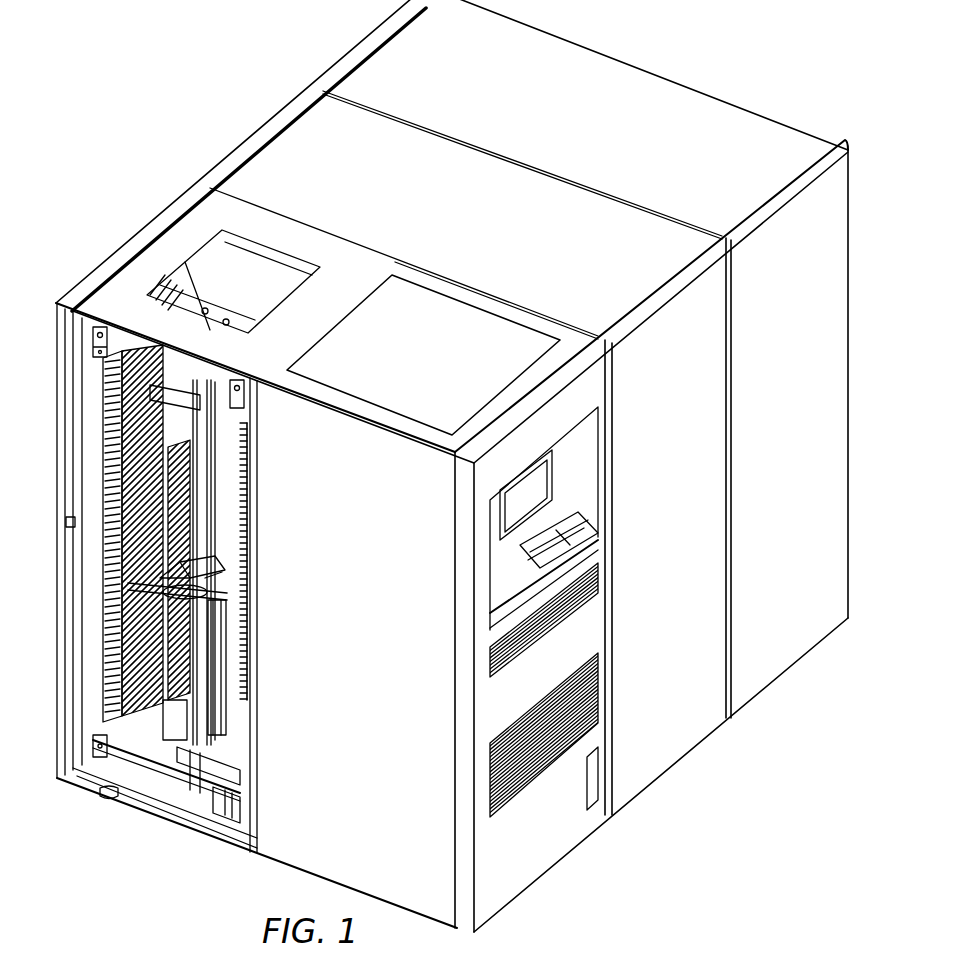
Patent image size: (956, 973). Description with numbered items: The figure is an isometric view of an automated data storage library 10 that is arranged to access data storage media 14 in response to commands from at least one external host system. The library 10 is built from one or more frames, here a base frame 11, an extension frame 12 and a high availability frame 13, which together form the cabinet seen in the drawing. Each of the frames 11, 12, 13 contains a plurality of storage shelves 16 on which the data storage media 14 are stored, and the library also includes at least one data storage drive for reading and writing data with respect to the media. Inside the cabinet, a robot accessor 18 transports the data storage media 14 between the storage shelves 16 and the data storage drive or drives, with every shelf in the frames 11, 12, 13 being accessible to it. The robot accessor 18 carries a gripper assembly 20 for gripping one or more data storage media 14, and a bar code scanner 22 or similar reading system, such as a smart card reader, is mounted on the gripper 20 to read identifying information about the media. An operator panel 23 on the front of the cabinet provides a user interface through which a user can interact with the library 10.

The automated data storage library 10 is at (200, 110).
The base frame 11 is at (553, 860).
The extension frame 12 is at (685, 750).
The high availability frame 13 is at (603, 62).
The data storage media 14 is at (100, 390).
The storage shelves 16 is at (58, 521).
The robot accessor 18 is at (180, 745).
The gripper assembly 20 is at (222, 620).
The bar code scanner 22 is at (215, 578).
The operator panel 23 is at (580, 540).